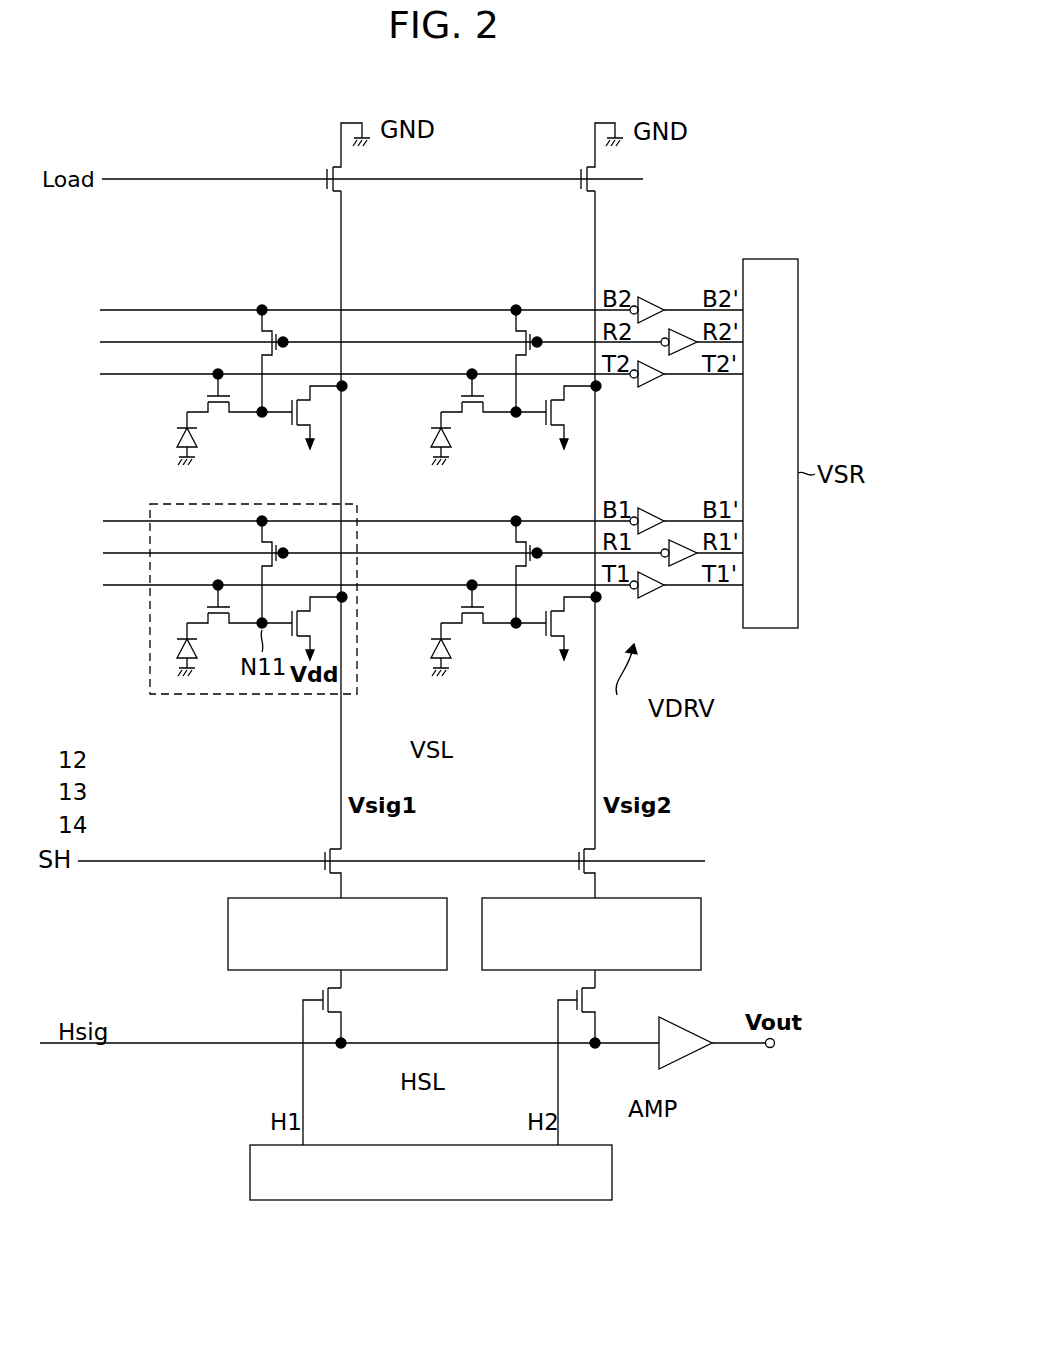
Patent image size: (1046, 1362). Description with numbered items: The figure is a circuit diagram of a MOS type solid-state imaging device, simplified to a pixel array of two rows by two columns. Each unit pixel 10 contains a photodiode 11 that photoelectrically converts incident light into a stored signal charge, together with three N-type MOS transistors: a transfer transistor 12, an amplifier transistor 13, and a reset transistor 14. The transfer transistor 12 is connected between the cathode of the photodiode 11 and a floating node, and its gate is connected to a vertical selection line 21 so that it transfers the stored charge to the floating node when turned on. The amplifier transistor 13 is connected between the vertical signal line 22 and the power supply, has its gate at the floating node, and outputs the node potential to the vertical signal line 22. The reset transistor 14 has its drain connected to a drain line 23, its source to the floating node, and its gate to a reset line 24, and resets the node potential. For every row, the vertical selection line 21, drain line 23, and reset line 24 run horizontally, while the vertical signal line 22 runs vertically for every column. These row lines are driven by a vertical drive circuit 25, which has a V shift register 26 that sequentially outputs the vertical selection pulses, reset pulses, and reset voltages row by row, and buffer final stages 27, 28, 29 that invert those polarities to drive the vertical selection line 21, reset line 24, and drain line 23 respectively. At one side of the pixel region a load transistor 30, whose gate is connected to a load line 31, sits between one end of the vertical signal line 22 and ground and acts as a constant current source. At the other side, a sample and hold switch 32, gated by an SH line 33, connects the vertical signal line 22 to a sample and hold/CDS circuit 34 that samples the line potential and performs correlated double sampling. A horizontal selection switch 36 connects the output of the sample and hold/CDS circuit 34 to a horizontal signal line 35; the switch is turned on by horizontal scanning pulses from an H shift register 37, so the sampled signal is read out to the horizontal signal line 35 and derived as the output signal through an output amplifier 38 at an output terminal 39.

The unit pixel 10 is at (176, 504).
The photodiode 11 is at (173, 652).
The transfer transistor 12 is at (219, 623).
The amplifier transistor 13 is at (298, 622).
The reset transistor 14 is at (271, 548).
The vertical selection line 21 is at (103, 585).
The vertical signal line 22 is at (342, 750).
The drain line 23 is at (103, 521).
The reset line 24 is at (103, 553).
The vertical drive circuit 25 is at (637, 721).
The V shift register 26 is at (770, 259).
The buffer final stage 27 is at (648, 389).
The buffer final stage 28 is at (682, 357).
The buffer final stage 29 is at (648, 294).
The load transistor 30 is at (348, 172).
The load line 31 is at (220, 178).
The sample and hold switch 32 is at (340, 857).
The SH line 33 is at (652, 861).
The sample and hold/CDS circuit 34 is at (228, 935).
The horizontal signal line 35 is at (378, 1047).
The horizontal selection switch 36 is at (345, 1000).
The H shift register 37 is at (612, 1172).
The output amplifier 38 is at (659, 1060).
The output terminal 39 is at (770, 1048).